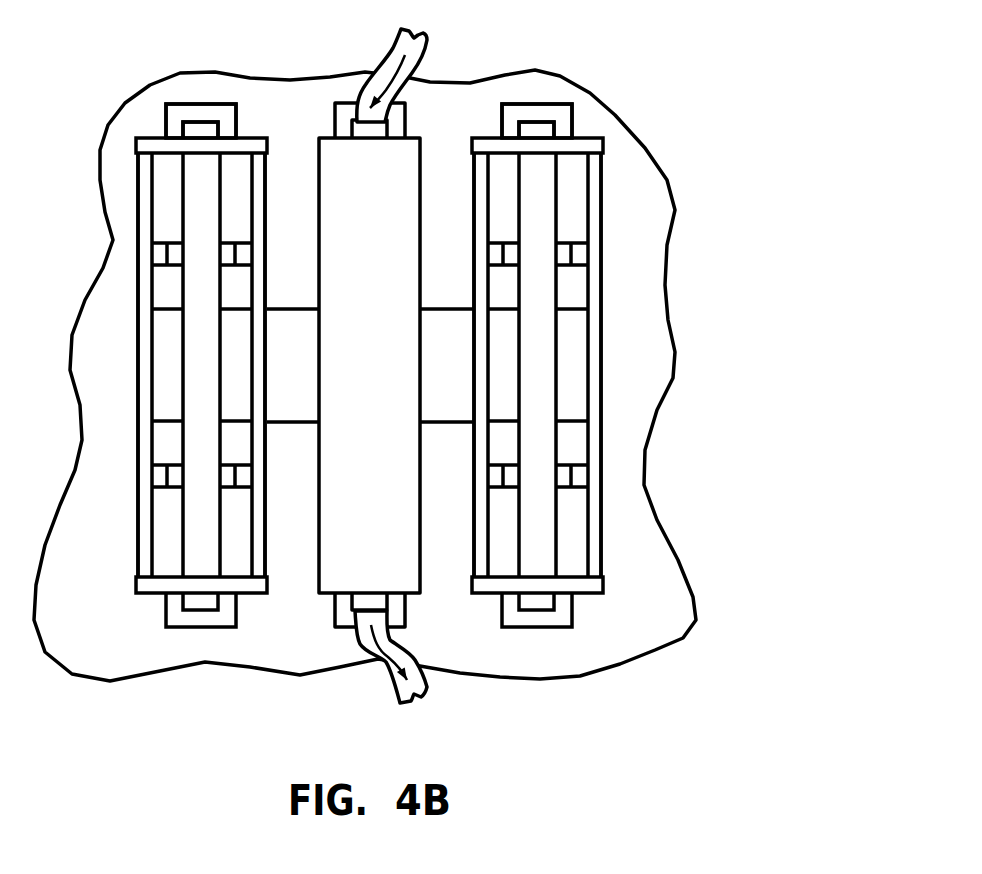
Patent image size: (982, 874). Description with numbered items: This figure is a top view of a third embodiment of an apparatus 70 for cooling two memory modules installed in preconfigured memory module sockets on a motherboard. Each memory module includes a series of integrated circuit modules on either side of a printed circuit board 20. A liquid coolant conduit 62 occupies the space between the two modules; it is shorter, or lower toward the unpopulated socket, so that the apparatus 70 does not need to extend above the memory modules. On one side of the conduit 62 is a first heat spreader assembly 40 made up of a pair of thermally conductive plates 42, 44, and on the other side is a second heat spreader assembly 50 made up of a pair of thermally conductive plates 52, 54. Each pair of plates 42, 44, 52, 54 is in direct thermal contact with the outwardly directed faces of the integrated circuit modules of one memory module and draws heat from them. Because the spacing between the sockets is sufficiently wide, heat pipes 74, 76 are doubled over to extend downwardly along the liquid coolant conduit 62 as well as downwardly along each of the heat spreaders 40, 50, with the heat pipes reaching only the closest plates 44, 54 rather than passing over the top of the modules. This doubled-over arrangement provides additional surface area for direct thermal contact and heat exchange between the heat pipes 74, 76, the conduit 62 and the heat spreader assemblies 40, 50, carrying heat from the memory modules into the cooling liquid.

The printed circuit board 20 is at (206, 132).
The first heat spreader assembly 40 is at (126, 158).
The thermally conductive plate 42 is at (134, 250).
The thermally conductive plate 44 is at (266, 175).
The second heat spreader assembly 50 is at (615, 143).
The thermally conductive plate 52 is at (603, 212).
The thermally conductive plate 54 is at (472, 202).
The liquid coolant conduit 62 is at (385, 378).
The apparatus for cooling the memory modules 70 is at (450, 107).
The heat pipe 74 is at (309, 378).
The heat pipe 76 is at (462, 378).